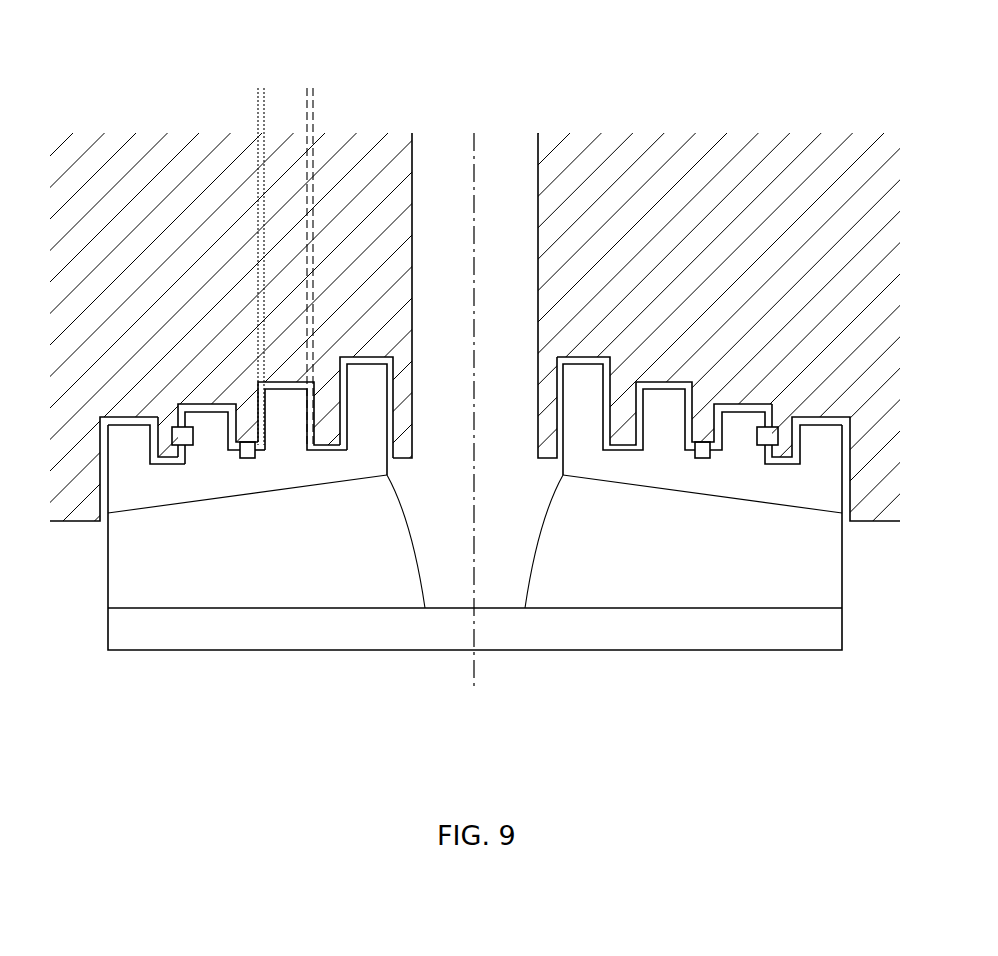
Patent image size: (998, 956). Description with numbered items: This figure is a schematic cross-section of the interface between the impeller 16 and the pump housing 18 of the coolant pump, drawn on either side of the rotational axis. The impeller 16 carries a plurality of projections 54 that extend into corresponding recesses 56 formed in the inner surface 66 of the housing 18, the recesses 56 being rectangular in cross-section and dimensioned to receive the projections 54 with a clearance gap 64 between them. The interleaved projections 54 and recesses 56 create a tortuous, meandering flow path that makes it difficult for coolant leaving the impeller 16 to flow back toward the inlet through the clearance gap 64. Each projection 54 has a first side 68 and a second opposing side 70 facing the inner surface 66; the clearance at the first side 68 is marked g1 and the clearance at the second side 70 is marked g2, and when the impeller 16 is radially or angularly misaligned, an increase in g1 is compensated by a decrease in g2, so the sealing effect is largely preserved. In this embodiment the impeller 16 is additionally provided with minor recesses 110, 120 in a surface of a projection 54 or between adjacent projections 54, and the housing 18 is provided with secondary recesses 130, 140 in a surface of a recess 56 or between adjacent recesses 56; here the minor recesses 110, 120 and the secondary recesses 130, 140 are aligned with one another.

The impeller 16 is at (742, 694).
The pump housing 18 is at (745, 212).
The projections 54 is at (820, 458).
The recesses 56 is at (735, 400).
The clearance gap 64 is at (850, 418).
The inner surface 66 is at (366, 356).
The first side 68 is at (277, 417).
The second opposing side 70 is at (298, 423).
The minor recess 110 is at (191, 446).
The minor recess 120 is at (702, 459).
The secondary recess 130 is at (153, 458).
The secondary recess 140 is at (249, 460).
The clearance gap between first side and inner surface g1 is at (263, 251).
The clearance gap between second side and inner surface g2 is at (308, 249).